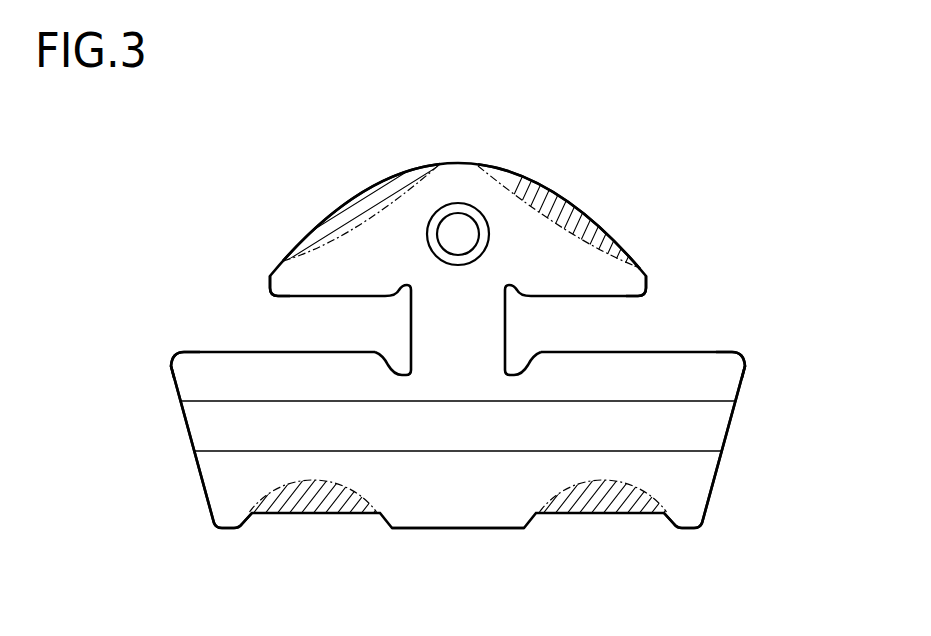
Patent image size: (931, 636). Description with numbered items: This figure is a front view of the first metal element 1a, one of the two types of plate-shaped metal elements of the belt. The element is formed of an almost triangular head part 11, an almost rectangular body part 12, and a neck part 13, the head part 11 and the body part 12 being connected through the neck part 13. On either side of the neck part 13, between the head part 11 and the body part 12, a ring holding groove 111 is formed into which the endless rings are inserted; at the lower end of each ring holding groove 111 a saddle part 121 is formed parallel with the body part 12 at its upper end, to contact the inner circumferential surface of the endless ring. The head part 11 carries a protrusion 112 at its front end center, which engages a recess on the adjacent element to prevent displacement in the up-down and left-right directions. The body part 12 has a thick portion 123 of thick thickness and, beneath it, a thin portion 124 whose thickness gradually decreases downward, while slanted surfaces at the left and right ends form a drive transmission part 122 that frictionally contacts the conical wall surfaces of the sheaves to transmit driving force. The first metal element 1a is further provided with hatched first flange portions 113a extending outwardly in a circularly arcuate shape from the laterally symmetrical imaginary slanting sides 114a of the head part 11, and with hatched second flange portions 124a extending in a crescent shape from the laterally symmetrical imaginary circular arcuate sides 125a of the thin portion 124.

The first metal element 1a is at (268, 181).
The head part 11 is at (470, 167).
The ring holding groove 111 is at (292, 298).
The protrusion 112 is at (457, 220).
The first flange portion 113a is at (306, 224).
The slanting side 114a is at (372, 196).
The neck part 13 is at (506, 333).
The body part 12 is at (740, 388).
The saddle part 121 is at (212, 352).
The drive transmission part 122 is at (198, 474).
The thick portion 123 is at (690, 387).
The thin portion 124 is at (683, 488).
The second flange portion 124a is at (307, 514).
The circular arcuate side 125a is at (249, 514).